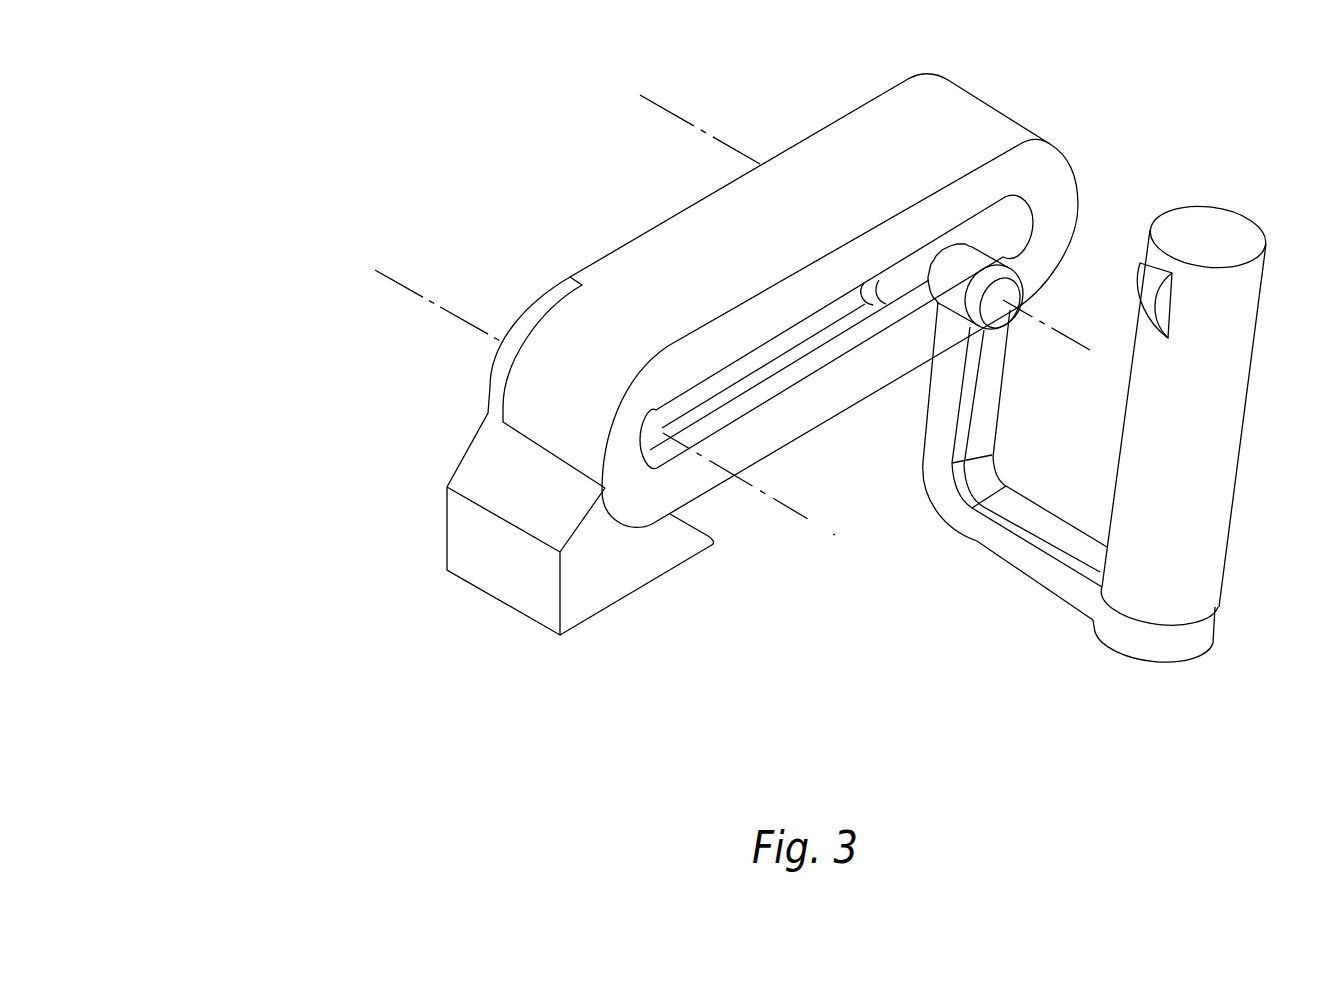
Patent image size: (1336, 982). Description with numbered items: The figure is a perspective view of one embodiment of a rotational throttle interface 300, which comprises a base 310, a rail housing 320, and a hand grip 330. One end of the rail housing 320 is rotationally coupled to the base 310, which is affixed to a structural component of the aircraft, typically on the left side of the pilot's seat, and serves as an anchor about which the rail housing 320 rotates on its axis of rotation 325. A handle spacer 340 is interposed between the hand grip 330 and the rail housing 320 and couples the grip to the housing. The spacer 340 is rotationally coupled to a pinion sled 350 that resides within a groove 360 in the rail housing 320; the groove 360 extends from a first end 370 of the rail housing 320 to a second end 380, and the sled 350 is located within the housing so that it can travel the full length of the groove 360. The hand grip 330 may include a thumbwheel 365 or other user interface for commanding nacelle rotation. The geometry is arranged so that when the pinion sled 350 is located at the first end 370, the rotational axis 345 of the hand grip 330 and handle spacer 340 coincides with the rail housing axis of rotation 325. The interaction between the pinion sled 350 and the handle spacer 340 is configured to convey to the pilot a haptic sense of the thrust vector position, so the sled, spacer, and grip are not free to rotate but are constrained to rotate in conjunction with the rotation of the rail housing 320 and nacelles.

The rotational throttle interface 300 is at (834, 767).
The base 310 is at (500, 602).
The rail housing 320 is at (741, 270).
The axis of rotation of the rail housing 325 is at (455, 314).
The hand grip 330 is at (1233, 498).
The handle spacer 340 is at (1030, 578).
The rotational axis of the hand grip/handle spacer 345 is at (718, 140).
The pinion sled 350 is at (879, 296).
The groove 360 is at (727, 416).
The thumbwheel 365 is at (1147, 295).
The first end of the rail housing 370 is at (490, 387).
The second end of the rail housing 380 is at (918, 74).